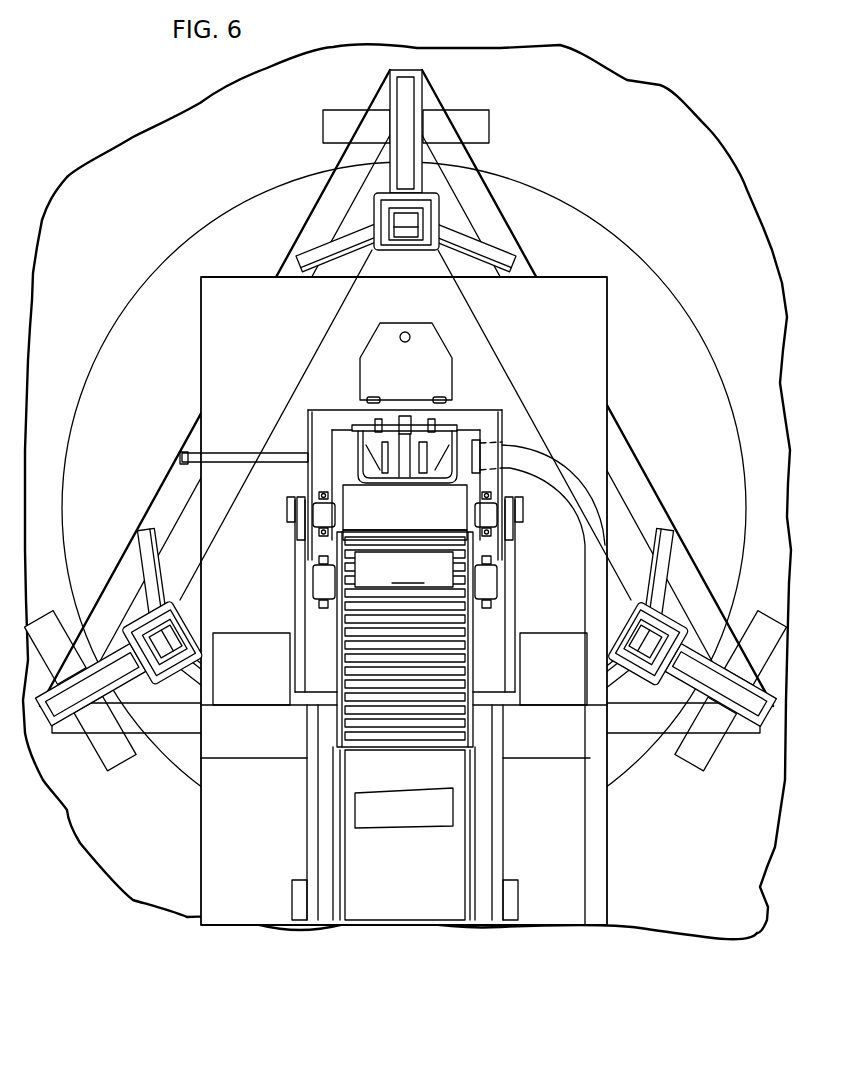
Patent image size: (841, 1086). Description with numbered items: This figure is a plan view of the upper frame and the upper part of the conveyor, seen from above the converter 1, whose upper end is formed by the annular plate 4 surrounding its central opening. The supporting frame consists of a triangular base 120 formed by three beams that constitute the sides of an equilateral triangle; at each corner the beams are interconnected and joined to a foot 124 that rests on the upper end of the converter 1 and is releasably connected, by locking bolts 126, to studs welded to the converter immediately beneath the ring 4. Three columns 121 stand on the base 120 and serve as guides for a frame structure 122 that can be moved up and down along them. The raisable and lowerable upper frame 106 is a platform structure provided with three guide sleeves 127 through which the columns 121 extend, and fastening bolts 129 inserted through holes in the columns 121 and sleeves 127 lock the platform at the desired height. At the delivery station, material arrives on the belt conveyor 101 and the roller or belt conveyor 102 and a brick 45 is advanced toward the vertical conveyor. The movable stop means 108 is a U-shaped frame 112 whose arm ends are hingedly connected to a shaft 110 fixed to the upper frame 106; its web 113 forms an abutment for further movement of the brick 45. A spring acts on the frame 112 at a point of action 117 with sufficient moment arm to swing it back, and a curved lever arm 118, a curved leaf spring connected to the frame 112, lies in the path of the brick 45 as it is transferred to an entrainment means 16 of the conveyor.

The converter 1 is at (698, 138).
The annular plate 4 is at (692, 362).
The entrainment means 16 is at (370, 428).
The brick 45 is at (407, 815).
The belt conveyor 101 is at (453, 843).
The roller or belt conveyor 102 is at (353, 717).
The upper frame 106 is at (616, 327).
The movable stop means 108 is at (342, 440).
The shaft 110 is at (436, 425).
The U-shaped frame 112 is at (350, 465).
The web 113 is at (410, 490).
The point of action 117 is at (405, 416).
The curved lever arm 118 is at (392, 470).
The triangular base 120 is at (666, 497).
The columns 121 is at (425, 216).
The frame structure 122 is at (534, 241).
The foot 124 is at (473, 118).
The locking bolts 126 is at (256, 513).
The guide sleeves 127 is at (372, 228).
The fastening bolts 129 is at (409, 240).